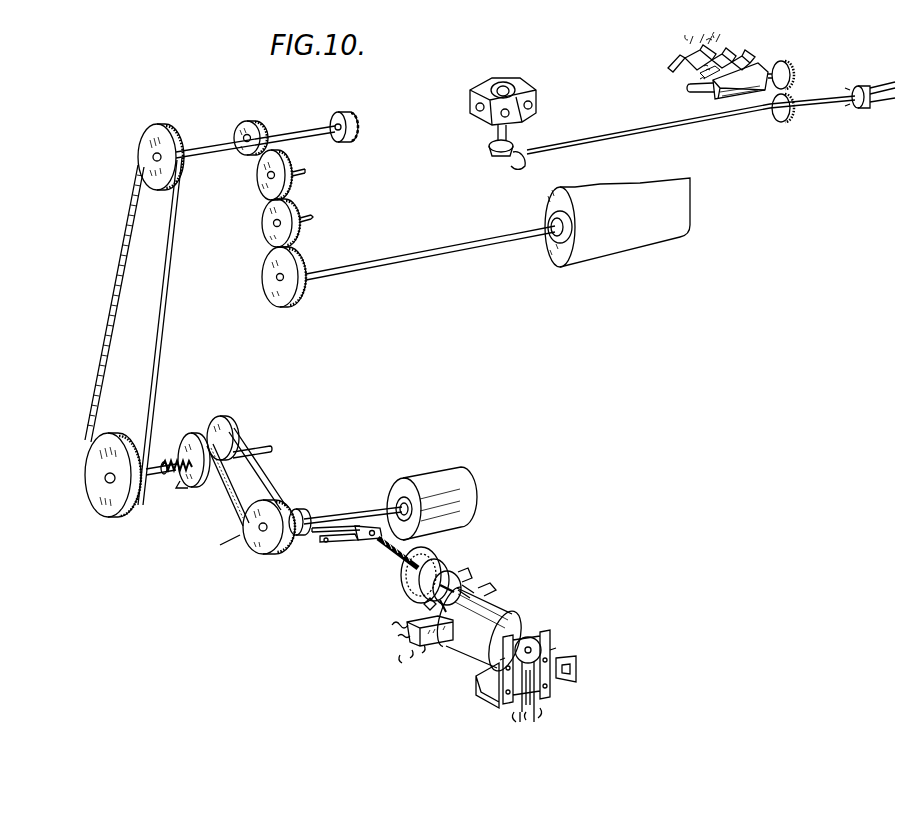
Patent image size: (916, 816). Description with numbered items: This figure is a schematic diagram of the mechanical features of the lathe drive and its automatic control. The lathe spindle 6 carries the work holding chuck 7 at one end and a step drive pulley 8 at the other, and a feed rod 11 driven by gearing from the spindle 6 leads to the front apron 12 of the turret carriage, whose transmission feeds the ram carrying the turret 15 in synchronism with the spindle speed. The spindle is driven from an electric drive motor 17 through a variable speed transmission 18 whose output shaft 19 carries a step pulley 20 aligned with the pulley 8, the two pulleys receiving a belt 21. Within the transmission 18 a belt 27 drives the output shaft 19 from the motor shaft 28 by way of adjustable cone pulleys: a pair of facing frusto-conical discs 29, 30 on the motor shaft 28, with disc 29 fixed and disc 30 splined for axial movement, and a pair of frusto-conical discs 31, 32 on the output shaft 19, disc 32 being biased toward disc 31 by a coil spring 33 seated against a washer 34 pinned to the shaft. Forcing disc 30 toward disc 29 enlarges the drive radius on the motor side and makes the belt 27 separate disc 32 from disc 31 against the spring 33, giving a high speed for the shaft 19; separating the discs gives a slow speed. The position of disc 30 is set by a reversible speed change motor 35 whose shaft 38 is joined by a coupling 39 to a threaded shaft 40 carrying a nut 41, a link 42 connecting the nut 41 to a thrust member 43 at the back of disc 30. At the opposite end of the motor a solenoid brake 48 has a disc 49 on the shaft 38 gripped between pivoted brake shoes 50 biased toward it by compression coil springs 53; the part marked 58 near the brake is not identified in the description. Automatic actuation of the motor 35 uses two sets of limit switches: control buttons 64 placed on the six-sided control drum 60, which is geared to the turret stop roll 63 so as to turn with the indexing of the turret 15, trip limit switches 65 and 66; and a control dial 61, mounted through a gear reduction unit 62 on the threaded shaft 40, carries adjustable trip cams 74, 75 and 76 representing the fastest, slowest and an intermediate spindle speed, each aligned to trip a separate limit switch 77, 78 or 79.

The lathe spindle 6 is at (220, 148).
The work holding chuck 7 is at (352, 137).
The step drive pulley 8 is at (138, 150).
The feed rod 11 is at (408, 258).
The front apron 12 is at (630, 245).
The turret 15 is at (530, 88).
The electric drive motor 17 is at (465, 486).
The variable speed transmission 18 is at (227, 543).
The output shaft 19 is at (152, 478).
The step pulley 20 is at (93, 468).
The belt 21 is at (110, 293).
The belt 27 is at (265, 482).
The motor shaft 28 is at (358, 516).
The frusto-conical disc 29 is at (256, 552).
The frusto-conical disc 30 is at (299, 510).
The frusto-conical disc 31 is at (244, 418).
The frusto-conical disc 32 is at (188, 434).
The coil spring 33 is at (185, 487).
The washer 34 is at (166, 460).
The speed change motor 35 is at (512, 616).
The shaft 38 is at (466, 594).
The coupling 39 is at (428, 600).
The threaded shaft 40 is at (402, 560).
The nut 41 is at (362, 542).
The link 42 is at (330, 544).
The thrust member 43 is at (312, 536).
The solenoid brake 48 is at (562, 646).
The disc 49 is at (515, 652).
The brake shoes 50 is at (500, 668).
The compression coil springs 53 is at (484, 694).
The spring 58 is at (530, 718).
The control drum 60 is at (740, 93).
The control dial 61 is at (440, 565).
The gear reduction unit 62 is at (452, 575).
The turret stop roll 63 is at (650, 127).
The control buttons 64 is at (700, 75).
The limit switch 65 is at (685, 60).
The limit switch 66 is at (710, 55).
The trip cam 74 is at (468, 570).
The trip cam 75 is at (412, 553).
The trip cam 76 is at (430, 606).
The limit switch 77 is at (498, 588).
The limit switch 78 is at (406, 626).
The limit switch 79 is at (412, 640).